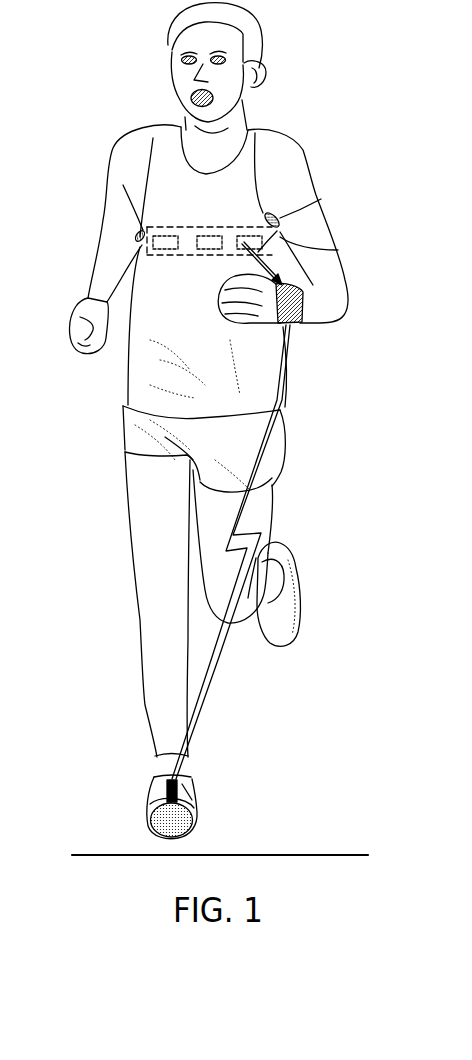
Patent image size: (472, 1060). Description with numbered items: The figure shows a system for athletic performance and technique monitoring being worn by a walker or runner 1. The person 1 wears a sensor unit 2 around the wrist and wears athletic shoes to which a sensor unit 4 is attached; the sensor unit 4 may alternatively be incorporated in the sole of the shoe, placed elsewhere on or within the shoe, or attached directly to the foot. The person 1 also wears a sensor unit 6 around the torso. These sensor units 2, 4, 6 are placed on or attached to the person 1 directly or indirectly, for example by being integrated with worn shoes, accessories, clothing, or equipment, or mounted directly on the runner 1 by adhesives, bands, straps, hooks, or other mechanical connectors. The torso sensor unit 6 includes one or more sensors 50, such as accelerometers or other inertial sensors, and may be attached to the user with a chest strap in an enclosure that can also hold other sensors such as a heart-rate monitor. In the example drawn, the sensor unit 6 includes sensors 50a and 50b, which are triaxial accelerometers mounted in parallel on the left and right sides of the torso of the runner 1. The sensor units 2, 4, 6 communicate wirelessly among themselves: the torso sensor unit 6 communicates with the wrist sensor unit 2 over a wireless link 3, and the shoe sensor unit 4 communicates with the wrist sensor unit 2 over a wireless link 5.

The walker or runner 1 is at (320, 146).
The sensor unit 2 is at (302, 323).
The wireless link 3 is at (285, 284).
The sensor unit 4 is at (183, 790).
The wireless link 5 is at (262, 533).
The sensor unit 6 is at (187, 258).
The sensors 50 is at (205, 236).
The sensor 50a is at (145, 236).
The sensor 50b is at (316, 208).